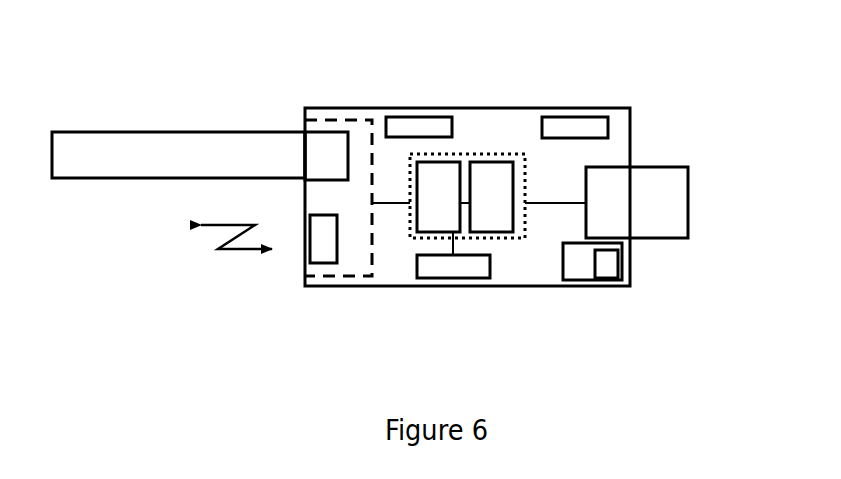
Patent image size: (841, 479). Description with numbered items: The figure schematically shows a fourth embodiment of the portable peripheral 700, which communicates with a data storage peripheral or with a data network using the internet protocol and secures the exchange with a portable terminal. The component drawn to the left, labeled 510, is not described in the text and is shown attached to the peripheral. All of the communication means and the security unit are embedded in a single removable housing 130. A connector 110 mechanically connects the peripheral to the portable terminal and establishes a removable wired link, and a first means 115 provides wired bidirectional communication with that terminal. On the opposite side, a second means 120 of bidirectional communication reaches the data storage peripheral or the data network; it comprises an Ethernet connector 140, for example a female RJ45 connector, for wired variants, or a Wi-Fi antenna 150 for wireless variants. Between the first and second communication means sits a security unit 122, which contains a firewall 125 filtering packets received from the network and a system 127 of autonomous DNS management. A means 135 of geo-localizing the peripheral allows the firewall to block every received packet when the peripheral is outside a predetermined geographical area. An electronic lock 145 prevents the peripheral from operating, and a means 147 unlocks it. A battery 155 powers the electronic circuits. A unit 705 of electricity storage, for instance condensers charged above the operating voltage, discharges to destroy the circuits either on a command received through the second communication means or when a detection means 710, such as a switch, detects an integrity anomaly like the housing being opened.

The connector 110 is at (655, 240).
The first means of wired bidirectional communication 115 is at (618, 177).
The second means of bidirectional communication 120 is at (358, 130).
The security unit 122 is at (497, 238).
The firewall 125 is at (427, 212).
The autonomous DNS management system 127 is at (487, 175).
The removable housing 130 is at (617, 108).
The means of geo-localizing 135 is at (453, 272).
The Ethernet connector 140 is at (308, 143).
The electronic lock 145 is at (583, 267).
The means of unlocking 147 is at (610, 280).
The antenna 150 is at (320, 228).
The battery 155 is at (410, 126).
The consumable article 510 is at (157, 147).
The portable peripheral 700 is at (456, 98).
The unit of electricity storage 705 is at (556, 128).
The detection means of integrity anomaly 710 is at (316, 286).